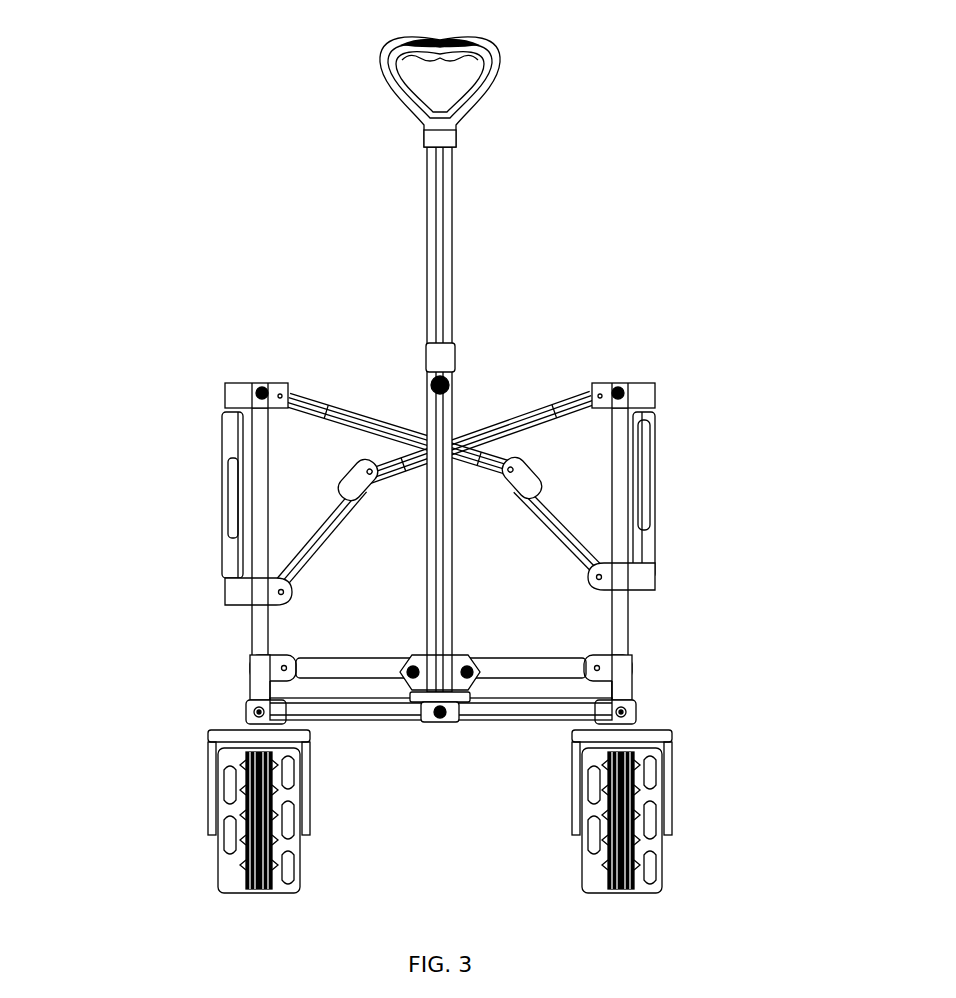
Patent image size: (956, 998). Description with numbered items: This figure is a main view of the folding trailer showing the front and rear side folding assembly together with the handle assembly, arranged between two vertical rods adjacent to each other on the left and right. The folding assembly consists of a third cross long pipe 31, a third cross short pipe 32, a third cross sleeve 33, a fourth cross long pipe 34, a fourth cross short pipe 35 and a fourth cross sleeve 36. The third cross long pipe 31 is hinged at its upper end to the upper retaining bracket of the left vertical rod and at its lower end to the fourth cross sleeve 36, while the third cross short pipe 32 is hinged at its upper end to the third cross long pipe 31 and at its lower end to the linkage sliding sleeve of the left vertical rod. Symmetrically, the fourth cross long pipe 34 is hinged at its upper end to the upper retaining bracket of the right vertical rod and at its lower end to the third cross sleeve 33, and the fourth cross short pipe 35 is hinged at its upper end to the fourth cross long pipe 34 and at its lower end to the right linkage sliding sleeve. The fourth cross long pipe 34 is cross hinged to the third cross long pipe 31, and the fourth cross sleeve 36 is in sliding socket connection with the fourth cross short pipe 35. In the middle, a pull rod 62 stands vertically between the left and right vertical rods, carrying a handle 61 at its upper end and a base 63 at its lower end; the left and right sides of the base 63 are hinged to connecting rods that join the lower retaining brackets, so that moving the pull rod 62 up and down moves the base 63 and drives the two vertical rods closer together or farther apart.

The third cross long pipe 31 is at (330, 405).
The third cross short pipe 32 is at (312, 535).
The third cross sleeve 33 is at (348, 478).
The fourth cross long pipe 34 is at (547, 405).
The fourth cross short pipe 35 is at (568, 527).
The fourth cross sleeve 36 is at (545, 468).
The handle 61 is at (378, 72).
The pull rod 62 is at (447, 292).
The base 63 is at (447, 692).